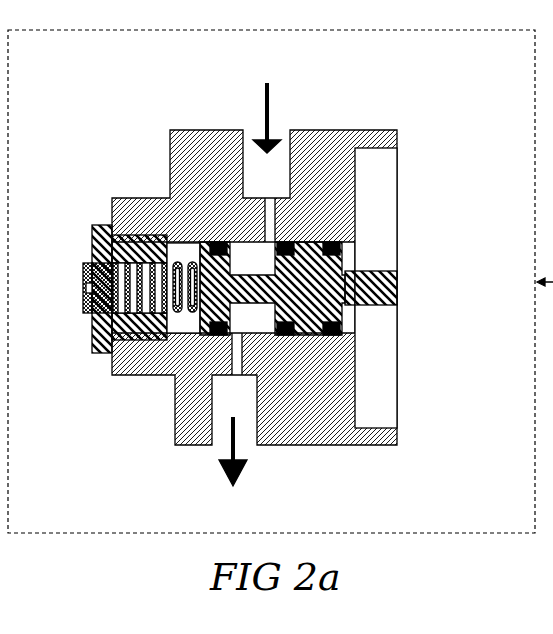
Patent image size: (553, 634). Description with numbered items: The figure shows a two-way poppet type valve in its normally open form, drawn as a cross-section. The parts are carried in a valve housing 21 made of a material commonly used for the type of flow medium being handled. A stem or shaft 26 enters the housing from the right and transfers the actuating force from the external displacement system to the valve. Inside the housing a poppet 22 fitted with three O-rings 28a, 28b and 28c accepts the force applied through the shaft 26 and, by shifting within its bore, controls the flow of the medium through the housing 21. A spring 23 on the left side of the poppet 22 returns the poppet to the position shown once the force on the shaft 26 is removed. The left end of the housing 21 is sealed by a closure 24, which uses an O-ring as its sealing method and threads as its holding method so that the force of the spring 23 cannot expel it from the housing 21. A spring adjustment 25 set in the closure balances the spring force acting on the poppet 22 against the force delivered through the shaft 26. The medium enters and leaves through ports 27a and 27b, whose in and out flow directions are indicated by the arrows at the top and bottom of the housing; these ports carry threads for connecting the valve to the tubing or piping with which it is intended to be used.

The valve housing 21 is at (185, 185).
The poppet 22 is at (258, 290).
The spring 23 is at (148, 288).
The closure 24 is at (102, 340).
The spring adjustment 25 is at (92, 270).
The stem or shaft 26 is at (395, 290).
The port 27a is at (282, 157).
The port 27b is at (227, 417).
The O-ring 28a is at (331, 335).
The O-ring 28b is at (287, 240).
The O-ring 28c is at (218, 335).